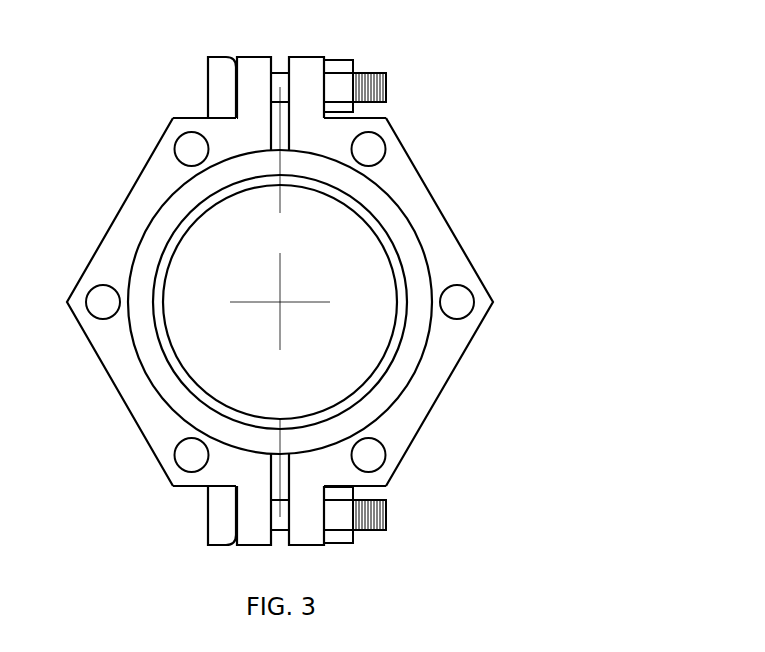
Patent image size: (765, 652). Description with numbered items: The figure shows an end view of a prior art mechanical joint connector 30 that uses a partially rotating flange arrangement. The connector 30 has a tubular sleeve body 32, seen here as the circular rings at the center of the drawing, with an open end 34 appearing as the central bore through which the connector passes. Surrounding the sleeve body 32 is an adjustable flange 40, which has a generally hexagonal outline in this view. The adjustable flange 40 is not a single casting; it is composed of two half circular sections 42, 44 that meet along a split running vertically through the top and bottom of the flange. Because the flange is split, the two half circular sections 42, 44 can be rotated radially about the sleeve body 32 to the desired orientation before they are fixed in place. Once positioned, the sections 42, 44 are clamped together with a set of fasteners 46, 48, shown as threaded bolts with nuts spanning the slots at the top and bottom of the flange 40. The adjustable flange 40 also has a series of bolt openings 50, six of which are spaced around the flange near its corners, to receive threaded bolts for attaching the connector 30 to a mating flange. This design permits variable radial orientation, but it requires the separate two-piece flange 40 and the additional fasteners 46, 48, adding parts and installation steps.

The MJ connector 30 is at (505, 217).
The tubular sleeve body 32 is at (365, 213).
The open end 34 is at (355, 300).
The adjustable flange 40 is at (433, 382).
The half circular section 42 is at (123, 405).
The half circular section 44 is at (423, 427).
The fastener 46 is at (375, 82).
The fastener 48 is at (387, 517).
The bolt openings 50 is at (189, 148).